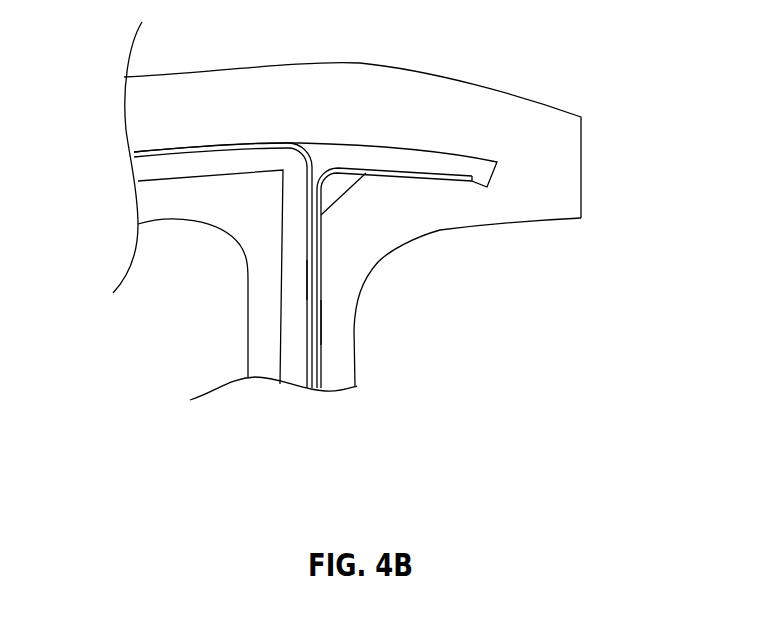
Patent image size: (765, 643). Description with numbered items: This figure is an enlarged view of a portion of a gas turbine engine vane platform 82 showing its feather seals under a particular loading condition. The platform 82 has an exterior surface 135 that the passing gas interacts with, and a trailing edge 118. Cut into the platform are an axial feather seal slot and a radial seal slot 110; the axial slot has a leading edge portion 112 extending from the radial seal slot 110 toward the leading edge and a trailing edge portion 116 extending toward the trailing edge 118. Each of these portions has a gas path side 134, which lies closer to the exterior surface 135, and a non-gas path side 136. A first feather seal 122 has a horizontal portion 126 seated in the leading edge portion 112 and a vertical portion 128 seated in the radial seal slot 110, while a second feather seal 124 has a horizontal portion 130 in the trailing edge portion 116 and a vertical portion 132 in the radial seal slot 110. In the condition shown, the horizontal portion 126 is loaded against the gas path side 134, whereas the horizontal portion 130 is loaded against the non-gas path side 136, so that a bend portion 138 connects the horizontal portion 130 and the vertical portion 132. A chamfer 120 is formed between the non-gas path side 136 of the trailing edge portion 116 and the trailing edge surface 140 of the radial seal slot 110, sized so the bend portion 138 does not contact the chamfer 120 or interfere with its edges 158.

The inner diameter platform 82 is at (282, 68).
The radial seal slot 110 is at (293, 313).
The leading edge portion 112 is at (203, 163).
The trailing edge portion 116 is at (402, 154).
The trailing edge 118 is at (582, 172).
The chamfer 120 is at (343, 197).
The first feather seal 122 is at (296, 263).
The second feather seal 124 is at (330, 323).
The horizontal portion 126 is at (215, 143).
The vertical portion 128 is at (308, 342).
The horizontal portion 130 is at (463, 174).
The vertical portion 132 is at (321, 362).
The gas path side 134 is at (362, 144).
The exterior surface 135 is at (235, 72).
The non-gas path side 136 is at (148, 180).
The bend portion 138 is at (330, 177).
The trailing edge surface 140 is at (380, 373).
The edges 158 is at (367, 175).